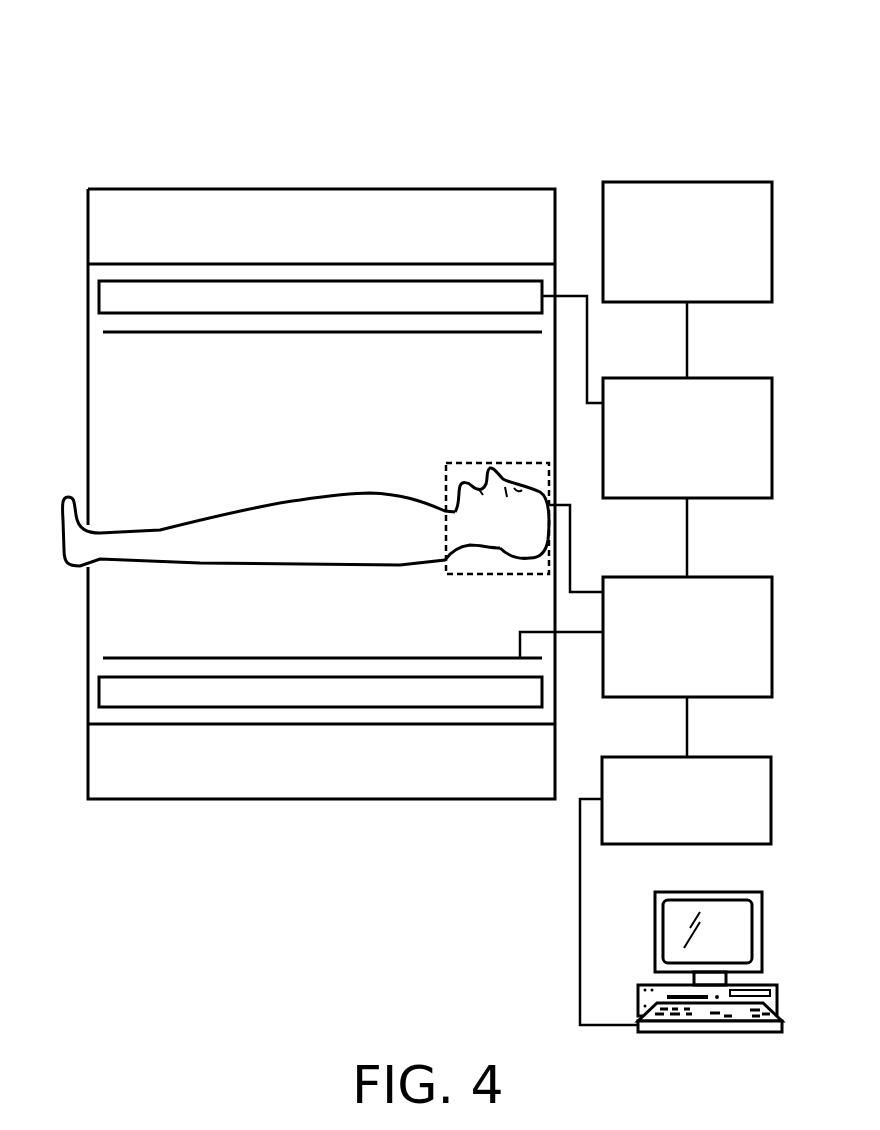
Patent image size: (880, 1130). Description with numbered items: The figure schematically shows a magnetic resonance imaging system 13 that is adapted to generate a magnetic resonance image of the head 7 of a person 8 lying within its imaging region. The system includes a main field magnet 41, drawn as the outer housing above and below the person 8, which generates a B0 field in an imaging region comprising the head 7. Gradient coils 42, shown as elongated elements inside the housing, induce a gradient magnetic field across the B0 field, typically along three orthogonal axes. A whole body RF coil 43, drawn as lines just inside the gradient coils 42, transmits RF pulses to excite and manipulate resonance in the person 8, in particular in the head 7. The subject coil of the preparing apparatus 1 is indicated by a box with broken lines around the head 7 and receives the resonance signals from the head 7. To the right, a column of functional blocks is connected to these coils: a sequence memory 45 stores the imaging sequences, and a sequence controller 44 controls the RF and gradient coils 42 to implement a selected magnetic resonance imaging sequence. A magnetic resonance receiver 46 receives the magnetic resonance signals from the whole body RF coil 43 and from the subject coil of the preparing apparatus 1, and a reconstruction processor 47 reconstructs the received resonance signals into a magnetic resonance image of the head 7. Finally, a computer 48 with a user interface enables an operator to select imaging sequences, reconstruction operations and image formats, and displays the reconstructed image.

The magnetic resonance imaging system 13 is at (552, 84).
The main field magnet 41 is at (286, 230).
The gradient coils 42 is at (213, 300).
The whole body RF coil 43 is at (160, 352).
The person 8 is at (270, 475).
The head 7 is at (516, 547).
The preparing apparatus 1 is at (465, 575).
The sequence memory 45 is at (742, 182).
The sequence controller 44 is at (742, 378).
The magnetic resonance receiver 46 is at (742, 577).
The reconstruction processor 47 is at (742, 757).
The computer 48 is at (641, 991).